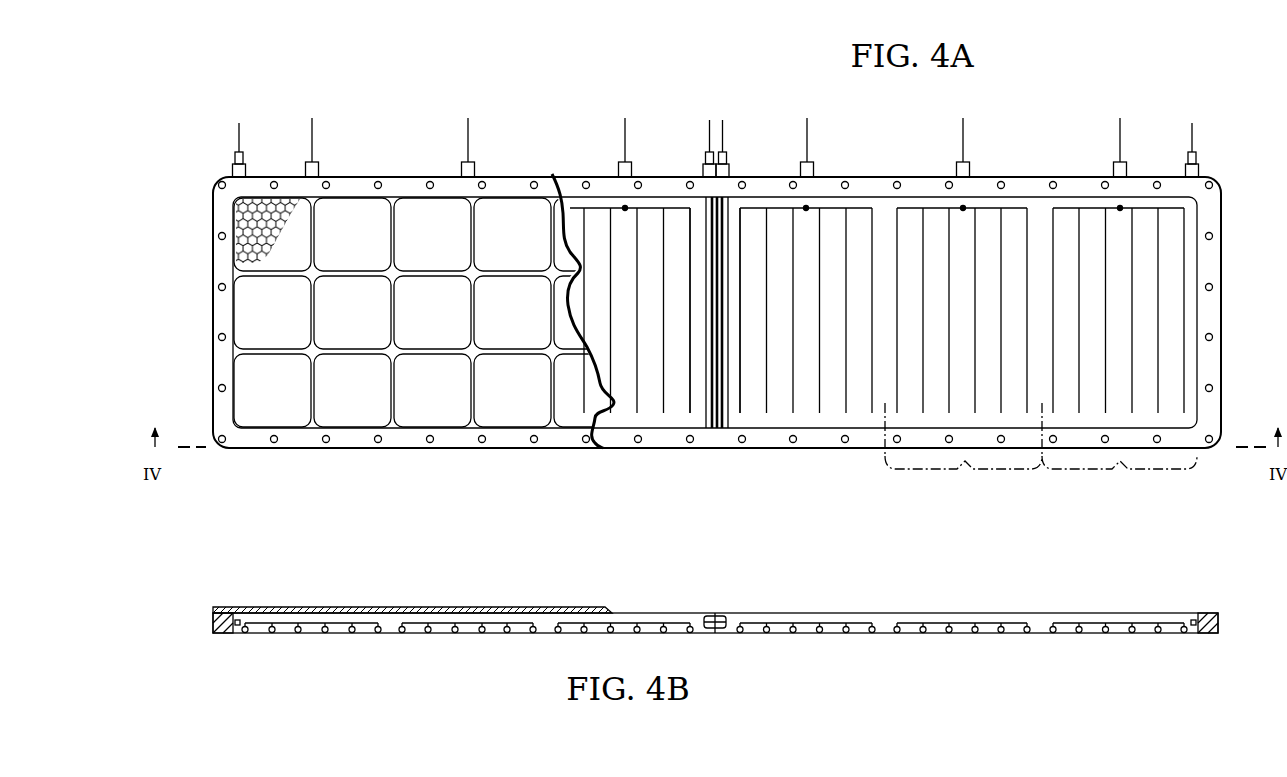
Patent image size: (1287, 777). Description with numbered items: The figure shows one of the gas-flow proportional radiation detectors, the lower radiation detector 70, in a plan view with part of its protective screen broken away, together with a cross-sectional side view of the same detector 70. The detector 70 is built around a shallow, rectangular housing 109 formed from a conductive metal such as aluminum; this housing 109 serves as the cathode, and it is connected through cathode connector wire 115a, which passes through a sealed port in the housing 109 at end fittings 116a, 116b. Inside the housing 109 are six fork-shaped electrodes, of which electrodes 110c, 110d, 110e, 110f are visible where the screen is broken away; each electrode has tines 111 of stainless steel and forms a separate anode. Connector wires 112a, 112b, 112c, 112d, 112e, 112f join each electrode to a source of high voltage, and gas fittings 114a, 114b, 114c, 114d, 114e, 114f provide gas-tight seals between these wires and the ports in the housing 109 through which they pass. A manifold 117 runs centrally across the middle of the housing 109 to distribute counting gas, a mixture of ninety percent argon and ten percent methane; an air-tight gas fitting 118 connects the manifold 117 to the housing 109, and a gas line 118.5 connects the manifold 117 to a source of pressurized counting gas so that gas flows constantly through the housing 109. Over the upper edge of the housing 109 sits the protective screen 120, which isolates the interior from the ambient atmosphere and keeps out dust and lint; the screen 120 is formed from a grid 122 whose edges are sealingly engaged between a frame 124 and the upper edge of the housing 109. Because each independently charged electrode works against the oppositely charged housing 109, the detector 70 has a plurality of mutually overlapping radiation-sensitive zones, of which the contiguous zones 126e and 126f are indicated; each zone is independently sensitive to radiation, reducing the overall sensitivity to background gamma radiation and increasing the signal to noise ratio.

In FIG. 4A, the lower radiation detector 70 is at (243, 95).
In FIG. 4B, the lower radiation detector 70 is at (243, 648).
In FIG. 4A, the housing 109 is at (1210, 258).
In FIG. 4B, the housing 109 is at (1012, 634).
In FIG. 4A, the fork-shaped electrode 110c is at (625, 208).
In FIG. 4A, the fork-shaped electrode 110d is at (806, 208).
In FIG. 4A, the fork-shaped electrode 110e is at (963, 208).
In FIG. 4A, the fork-shaped electrode 110f is at (1120, 208).
In FIG. 4A, the plates 111 is at (740, 398).
In FIG. 4A, the connector wire 112a is at (312, 133).
In FIG. 4A, the connector wire 112b is at (468, 133).
In FIG. 4A, the connector wire 112c is at (625, 133).
In FIG. 4A, the connector wire 112d is at (807, 133).
In FIG. 4A, the connector wire 112e is at (963, 133).
In FIG. 4A, the connector wire 112f is at (1120, 133).
In FIG. 4A, the gas fitting 114a is at (319, 170).
In FIG. 4A, the gas fitting 114b is at (475, 170).
In FIG. 4A, the gas fitting 114c is at (632, 170).
In FIG. 4A, the gas fitting 114d is at (814, 170).
In FIG. 4A, the gas fitting 114e is at (970, 170).
In FIG. 4A, the gas fitting 114f is at (1127, 170).
In FIG. 4A, the cathode connector wire 115a is at (237, 138).
In FIG. 4A, the end terminal fitting 116a is at (234, 162).
In FIG. 4A, the end terminal fitting 116b is at (1198, 160).
In FIG. 4A, the manifold 117 is at (722, 302).
In FIG. 4B, the manifold 117 is at (726, 614).
In FIG. 4A, the gas fitting 118 is at (723, 133).
In FIG. 4A, the gas line 118.5 is at (708, 133).
In FIG. 4A, the protective screen 120 is at (255, 455).
In FIG. 4B, the protective screen 120 is at (301, 603).
In FIG. 4A, the grid 122 is at (392, 394).
In FIG. 4A, the frame 124 is at (552, 438).
In FIG. 4A, the radiation sensitive zone 126e is at (963, 450).
In FIG. 4A, the radiation sensitive zone 126f is at (1119, 450).